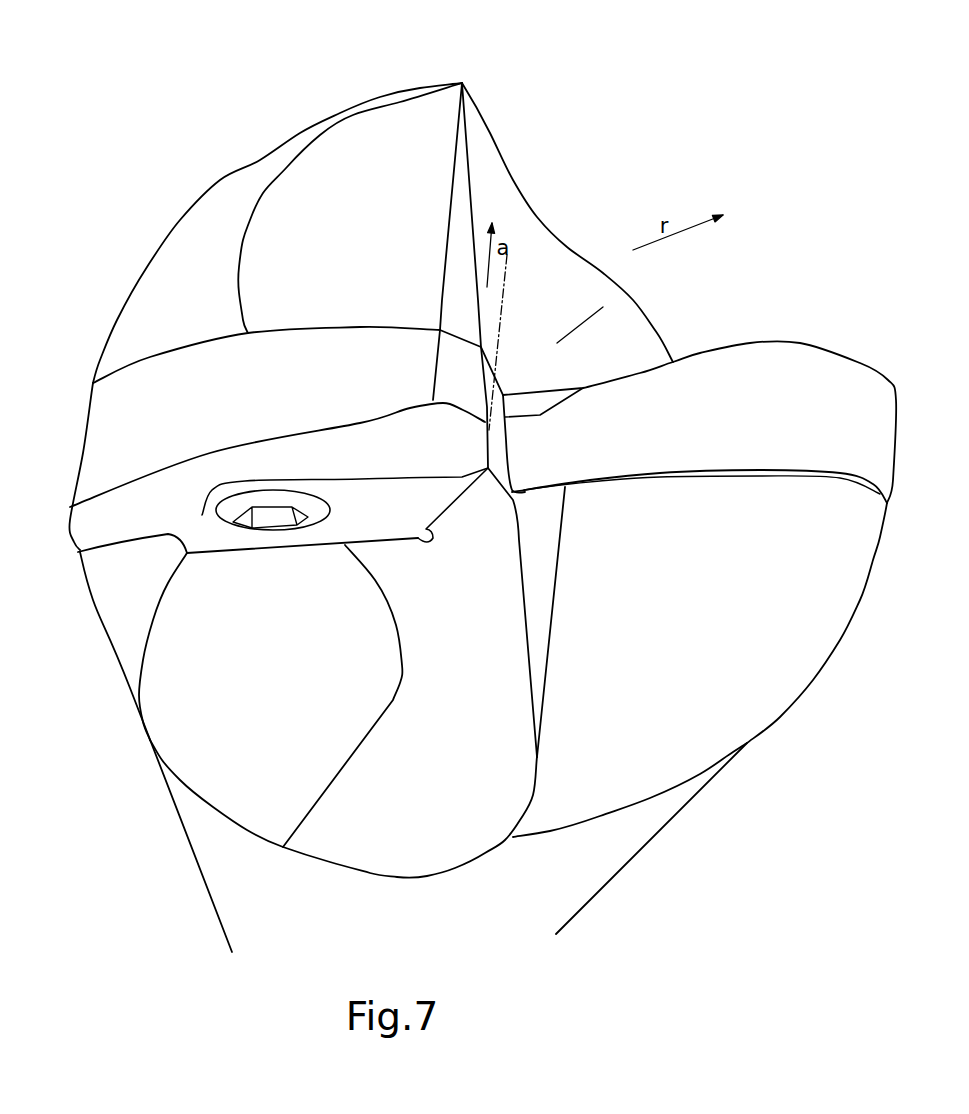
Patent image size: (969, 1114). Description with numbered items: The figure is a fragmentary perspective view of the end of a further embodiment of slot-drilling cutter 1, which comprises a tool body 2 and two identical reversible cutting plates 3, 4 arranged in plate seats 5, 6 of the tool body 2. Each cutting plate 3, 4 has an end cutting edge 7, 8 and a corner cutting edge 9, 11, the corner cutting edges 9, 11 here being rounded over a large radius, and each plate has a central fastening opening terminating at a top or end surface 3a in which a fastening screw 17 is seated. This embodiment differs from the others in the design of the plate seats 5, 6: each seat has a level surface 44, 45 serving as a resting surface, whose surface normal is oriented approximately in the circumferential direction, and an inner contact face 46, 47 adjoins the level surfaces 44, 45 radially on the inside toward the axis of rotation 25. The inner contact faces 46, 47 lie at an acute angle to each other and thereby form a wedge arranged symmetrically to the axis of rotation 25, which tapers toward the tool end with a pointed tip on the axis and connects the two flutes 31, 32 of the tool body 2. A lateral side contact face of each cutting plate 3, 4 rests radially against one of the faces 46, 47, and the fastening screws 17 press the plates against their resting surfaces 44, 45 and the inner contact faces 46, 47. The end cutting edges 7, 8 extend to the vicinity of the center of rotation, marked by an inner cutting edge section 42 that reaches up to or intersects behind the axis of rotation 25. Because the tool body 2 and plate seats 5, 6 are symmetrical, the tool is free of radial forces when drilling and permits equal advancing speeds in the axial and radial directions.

The slot-drilling cutter 1 is at (715, 107).
The tool body 2 is at (530, 255).
The cutting plate 3 is at (136, 506).
The end surface of cutting plate 3a is at (163, 515).
The cutting plate 4 is at (807, 343).
The plate seat 5 is at (345, 310).
The plate seat 6 is at (705, 478).
The end cutting edge 7 is at (305, 430).
The end cutting edge 8 is at (670, 362).
The corner cutting edge 9 is at (115, 470).
The corner cutting edge 11 is at (860, 363).
The fastening screw 17 is at (315, 503).
The axis of rotation 25 is at (500, 300).
The flute 31 is at (378, 170).
The flute 32 is at (662, 645).
The inner cutting edge section 42 is at (550, 397).
The level surface 44 is at (271, 330).
The level surface 45 is at (773, 473).
The inner contact face 46 is at (462, 503).
The inner contact face 47 is at (498, 468).